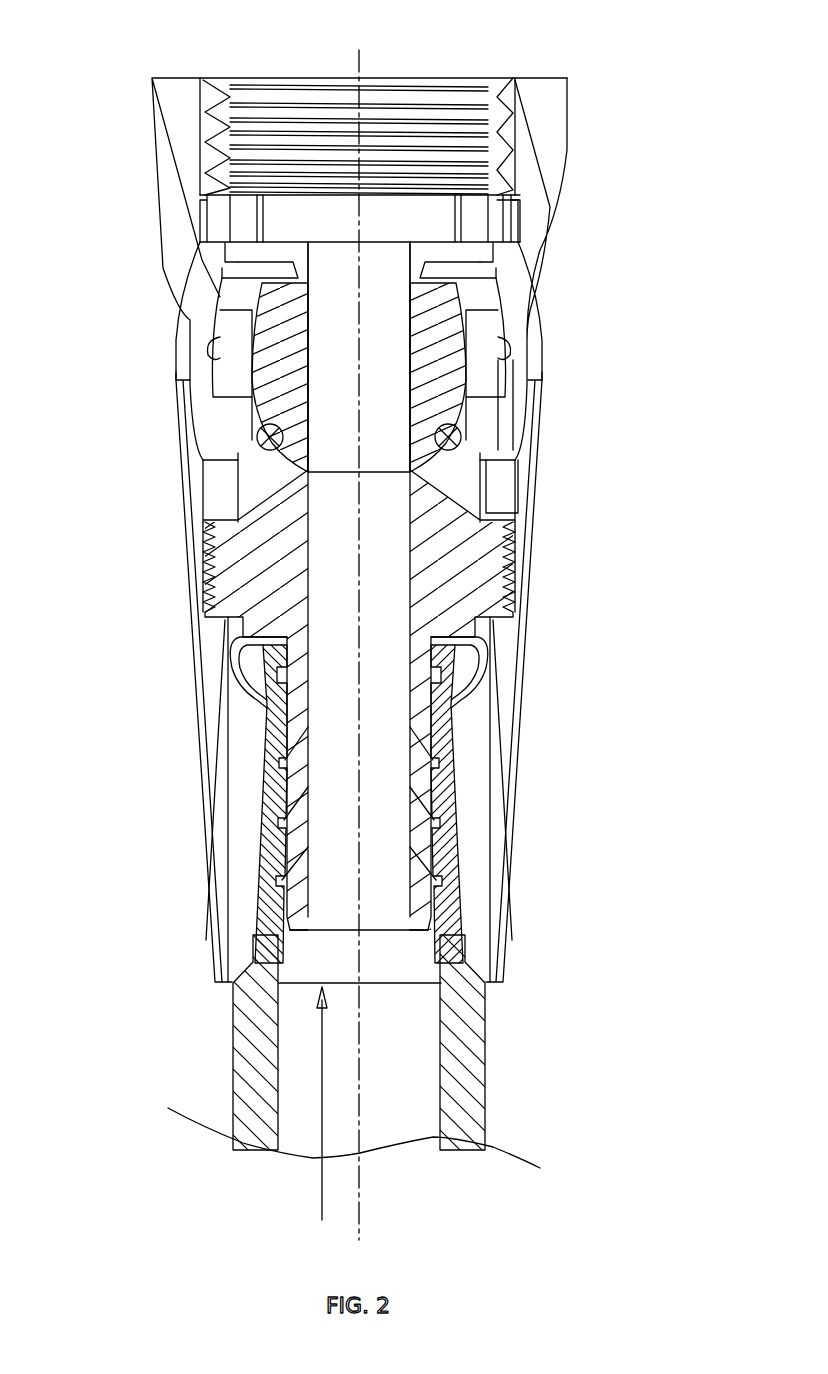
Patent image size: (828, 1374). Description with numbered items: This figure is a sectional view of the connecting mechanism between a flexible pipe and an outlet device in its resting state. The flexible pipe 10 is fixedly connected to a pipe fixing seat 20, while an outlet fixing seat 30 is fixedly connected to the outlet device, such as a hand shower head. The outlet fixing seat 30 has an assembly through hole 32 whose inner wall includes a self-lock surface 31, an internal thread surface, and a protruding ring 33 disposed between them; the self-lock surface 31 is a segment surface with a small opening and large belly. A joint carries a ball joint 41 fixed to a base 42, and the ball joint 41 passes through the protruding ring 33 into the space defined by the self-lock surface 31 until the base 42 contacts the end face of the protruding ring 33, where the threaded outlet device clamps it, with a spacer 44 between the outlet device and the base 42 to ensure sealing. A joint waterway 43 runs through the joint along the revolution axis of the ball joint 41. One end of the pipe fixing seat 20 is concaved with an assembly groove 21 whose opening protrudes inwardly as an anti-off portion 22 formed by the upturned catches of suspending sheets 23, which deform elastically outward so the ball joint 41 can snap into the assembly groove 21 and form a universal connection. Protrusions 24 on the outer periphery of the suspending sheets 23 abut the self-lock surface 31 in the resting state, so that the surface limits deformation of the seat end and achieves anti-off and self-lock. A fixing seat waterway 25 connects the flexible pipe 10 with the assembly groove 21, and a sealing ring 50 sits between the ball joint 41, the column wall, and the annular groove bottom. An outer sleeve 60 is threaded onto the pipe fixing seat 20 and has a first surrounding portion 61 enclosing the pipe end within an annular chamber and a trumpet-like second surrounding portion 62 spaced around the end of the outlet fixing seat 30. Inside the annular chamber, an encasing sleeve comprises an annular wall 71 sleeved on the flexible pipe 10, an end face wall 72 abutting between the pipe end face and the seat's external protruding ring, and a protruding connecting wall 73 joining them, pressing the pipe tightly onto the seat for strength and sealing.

The flexible pipe 10 is at (465, 1028).
The pipe fixing seat 20 is at (280, 542).
The assembly groove 21 is at (232, 373).
The anti-off portion 22 is at (262, 320).
The suspending sheets 23 is at (487, 373).
The protrusion 24 is at (520, 346).
The fixing seat waterway 25 is at (382, 863).
The outlet fixing seat 30 is at (178, 145).
The self-lock surface 31 is at (513, 300).
The assembly through hole 32 is at (292, 150).
The protruding ring 33 is at (258, 266).
The ball joint 41 is at (517, 467).
The base 42 is at (258, 240).
The joint waterway 43 is at (470, 243).
The spacer 44 is at (472, 207).
The sealing ring 50 is at (283, 432).
The outer sleeve 60 is at (200, 595).
The first surrounding portion 61 is at (203, 750).
The second surrounding portion 62 is at (183, 410).
The annular wall 71 is at (460, 800).
The end face wall 72 is at (447, 610).
The connecting wall 73 is at (505, 652).